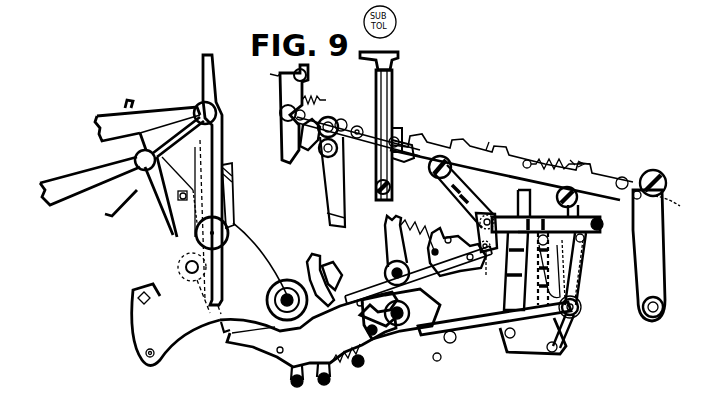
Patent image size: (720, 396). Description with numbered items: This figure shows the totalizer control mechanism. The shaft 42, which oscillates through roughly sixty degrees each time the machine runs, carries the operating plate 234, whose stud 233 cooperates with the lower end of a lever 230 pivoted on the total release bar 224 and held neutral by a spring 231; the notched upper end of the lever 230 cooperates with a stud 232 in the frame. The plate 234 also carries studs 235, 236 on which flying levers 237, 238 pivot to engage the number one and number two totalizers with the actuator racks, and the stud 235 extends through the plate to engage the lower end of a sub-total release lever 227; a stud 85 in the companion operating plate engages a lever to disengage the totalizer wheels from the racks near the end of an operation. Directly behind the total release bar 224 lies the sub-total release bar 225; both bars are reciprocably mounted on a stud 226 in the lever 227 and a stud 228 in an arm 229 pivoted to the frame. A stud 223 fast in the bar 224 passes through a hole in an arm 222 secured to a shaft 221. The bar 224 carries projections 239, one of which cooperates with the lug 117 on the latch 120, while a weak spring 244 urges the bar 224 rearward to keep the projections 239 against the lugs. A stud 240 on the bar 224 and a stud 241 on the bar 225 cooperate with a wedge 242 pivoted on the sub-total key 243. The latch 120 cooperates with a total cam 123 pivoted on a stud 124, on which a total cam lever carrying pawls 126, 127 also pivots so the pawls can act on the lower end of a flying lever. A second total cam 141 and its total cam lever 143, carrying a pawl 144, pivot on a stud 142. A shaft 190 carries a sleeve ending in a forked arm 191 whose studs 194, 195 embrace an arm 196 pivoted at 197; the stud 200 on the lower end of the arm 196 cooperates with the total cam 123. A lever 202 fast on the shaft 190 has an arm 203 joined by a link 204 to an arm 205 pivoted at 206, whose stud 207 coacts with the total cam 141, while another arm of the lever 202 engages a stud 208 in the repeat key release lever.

The shaft 42 is at (288, 296).
The stud 85 is at (232, 168).
The lug 117 is at (545, 157).
The latch 120 is at (512, 198).
The total cam 123 is at (497, 350).
The stud 124 is at (397, 325).
The pawl 126 is at (222, 333).
The pawl 127 is at (334, 275).
The total cam 141 is at (384, 238).
The stud 142 is at (385, 262).
The total cam lever 143 is at (236, 342).
The pawl 144 is at (314, 260).
The shaft 190 is at (578, 305).
The forked arm 191 is at (575, 320).
The stud 194 is at (543, 271).
The stud 195 is at (585, 237).
The arm 196 is at (578, 203).
The pivot 197 is at (590, 167).
The stud 200 is at (560, 350).
The lever 202 is at (581, 309).
The arm 203 is at (588, 252).
The link 204 is at (480, 221).
The arm 205 is at (446, 232).
The pivot 206 is at (438, 178).
The stud 207 is at (488, 265).
The stud 208 is at (438, 361).
The shaft 221 is at (654, 317).
The arm 222 is at (660, 260).
The stud 223 is at (648, 172).
The total release bar 224 is at (345, 110).
The sub-total release bar 225 is at (425, 140).
The stud 226 is at (314, 140).
The sub-total release lever 227 is at (330, 205).
The stud 228 is at (675, 196).
The arm 229 is at (600, 270).
The lever 230 is at (260, 72).
The spring 231 is at (282, 130).
The stud 232 is at (307, 74).
The stud 233 is at (186, 192).
The operating plate 234 is at (150, 288).
The stud 235 is at (228, 232).
The stud 236 is at (180, 260).
The flying lever 237 is at (222, 195).
The flying lever 238 is at (150, 200).
The projections 239 is at (500, 135).
The stud 240 is at (343, 139).
The stud 241 is at (406, 155).
The wedge 242 is at (398, 128).
The sub-total key 243 is at (393, 95).
The spring 244 is at (319, 90).